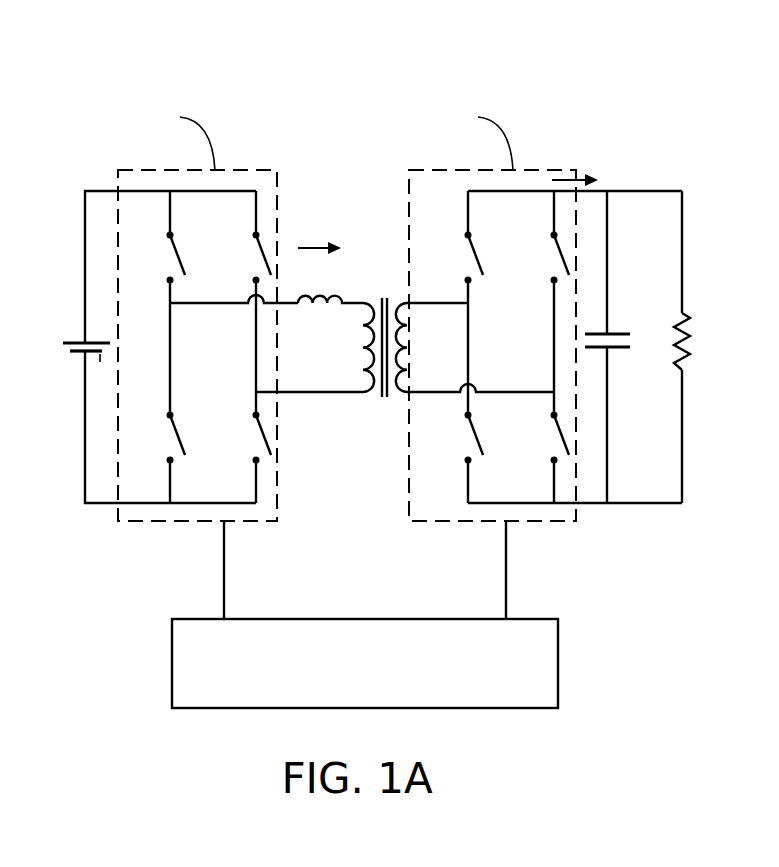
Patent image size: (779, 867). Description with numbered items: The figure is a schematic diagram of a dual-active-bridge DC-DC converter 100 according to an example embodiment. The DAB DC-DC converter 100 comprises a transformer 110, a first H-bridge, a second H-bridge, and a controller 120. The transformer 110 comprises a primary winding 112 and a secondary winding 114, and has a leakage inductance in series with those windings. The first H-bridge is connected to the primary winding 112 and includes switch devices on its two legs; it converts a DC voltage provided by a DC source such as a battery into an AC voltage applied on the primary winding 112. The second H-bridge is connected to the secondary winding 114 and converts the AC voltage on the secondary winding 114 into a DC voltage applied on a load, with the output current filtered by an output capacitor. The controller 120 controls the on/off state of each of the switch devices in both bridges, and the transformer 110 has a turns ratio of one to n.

The DAB DC-DC converter 100 is at (350, 72).
The transformer 110 is at (369, 268).
The primary winding 112 is at (366, 365).
The secondary winding 114 is at (405, 364).
The controller 120 is at (365, 614).